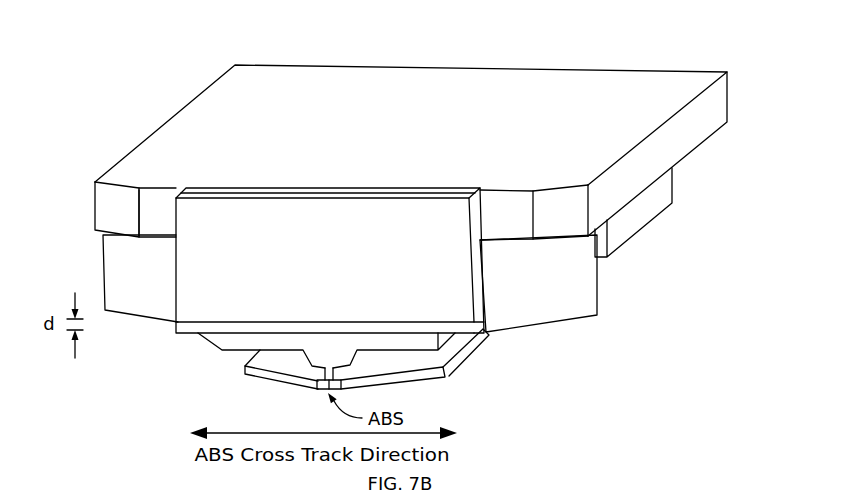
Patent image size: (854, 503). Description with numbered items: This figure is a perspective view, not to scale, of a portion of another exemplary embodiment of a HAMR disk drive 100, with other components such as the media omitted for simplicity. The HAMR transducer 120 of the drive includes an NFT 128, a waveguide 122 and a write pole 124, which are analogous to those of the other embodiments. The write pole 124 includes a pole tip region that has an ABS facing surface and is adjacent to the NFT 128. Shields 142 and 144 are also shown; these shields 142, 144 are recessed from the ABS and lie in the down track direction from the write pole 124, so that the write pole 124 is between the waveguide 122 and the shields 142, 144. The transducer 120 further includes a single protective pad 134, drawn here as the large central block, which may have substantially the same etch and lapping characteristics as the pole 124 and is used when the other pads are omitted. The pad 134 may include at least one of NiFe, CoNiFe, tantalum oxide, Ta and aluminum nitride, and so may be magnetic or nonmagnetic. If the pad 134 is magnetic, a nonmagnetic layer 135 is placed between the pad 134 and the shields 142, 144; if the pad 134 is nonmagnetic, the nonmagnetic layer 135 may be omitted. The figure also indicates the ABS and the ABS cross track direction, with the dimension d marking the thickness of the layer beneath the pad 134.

The HAMR disk drive 100 is at (342, 34).
The HAMR transducer 120 is at (394, 292).
The shield 144 is at (654, 72).
The protective pad 134 is at (176, 222).
The shield 142 is at (102, 275).
The nonmagnetic layer 135 is at (486, 336).
The NFT 128 is at (327, 389).
The waveguide 122 is at (254, 381).
The write pole 124 is at (450, 367).